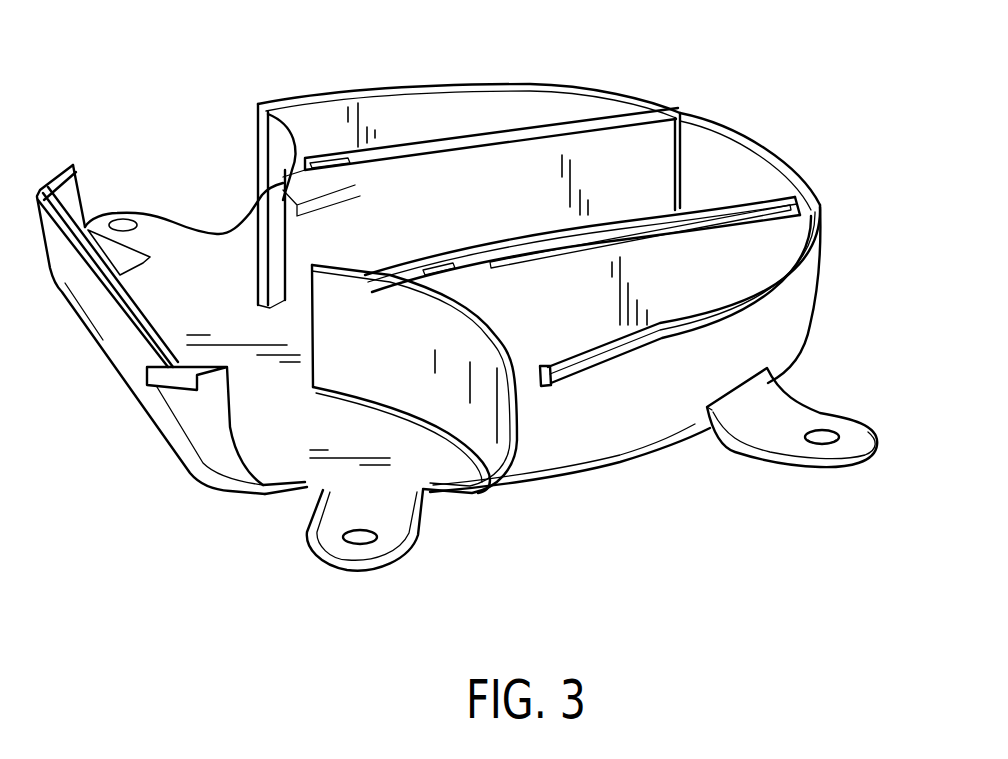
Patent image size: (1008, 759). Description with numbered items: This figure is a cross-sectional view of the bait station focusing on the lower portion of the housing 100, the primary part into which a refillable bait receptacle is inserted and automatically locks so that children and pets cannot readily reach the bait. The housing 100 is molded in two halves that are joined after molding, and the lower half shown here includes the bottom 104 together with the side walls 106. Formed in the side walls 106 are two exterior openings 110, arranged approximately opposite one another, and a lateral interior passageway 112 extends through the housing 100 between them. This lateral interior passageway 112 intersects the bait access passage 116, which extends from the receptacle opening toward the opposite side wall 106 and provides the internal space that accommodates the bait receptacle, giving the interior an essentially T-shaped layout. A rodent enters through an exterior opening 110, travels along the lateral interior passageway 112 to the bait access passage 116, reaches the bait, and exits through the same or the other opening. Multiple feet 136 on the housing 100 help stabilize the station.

The housing 100 is at (788, 88).
The bottom 104 is at (407, 463).
The side walls 106 is at (588, 436).
The exterior openings 110 is at (290, 450).
The lateral interior passageway 112 is at (186, 272).
The bait access passage 116 is at (404, 205).
The feet 136 is at (840, 417).